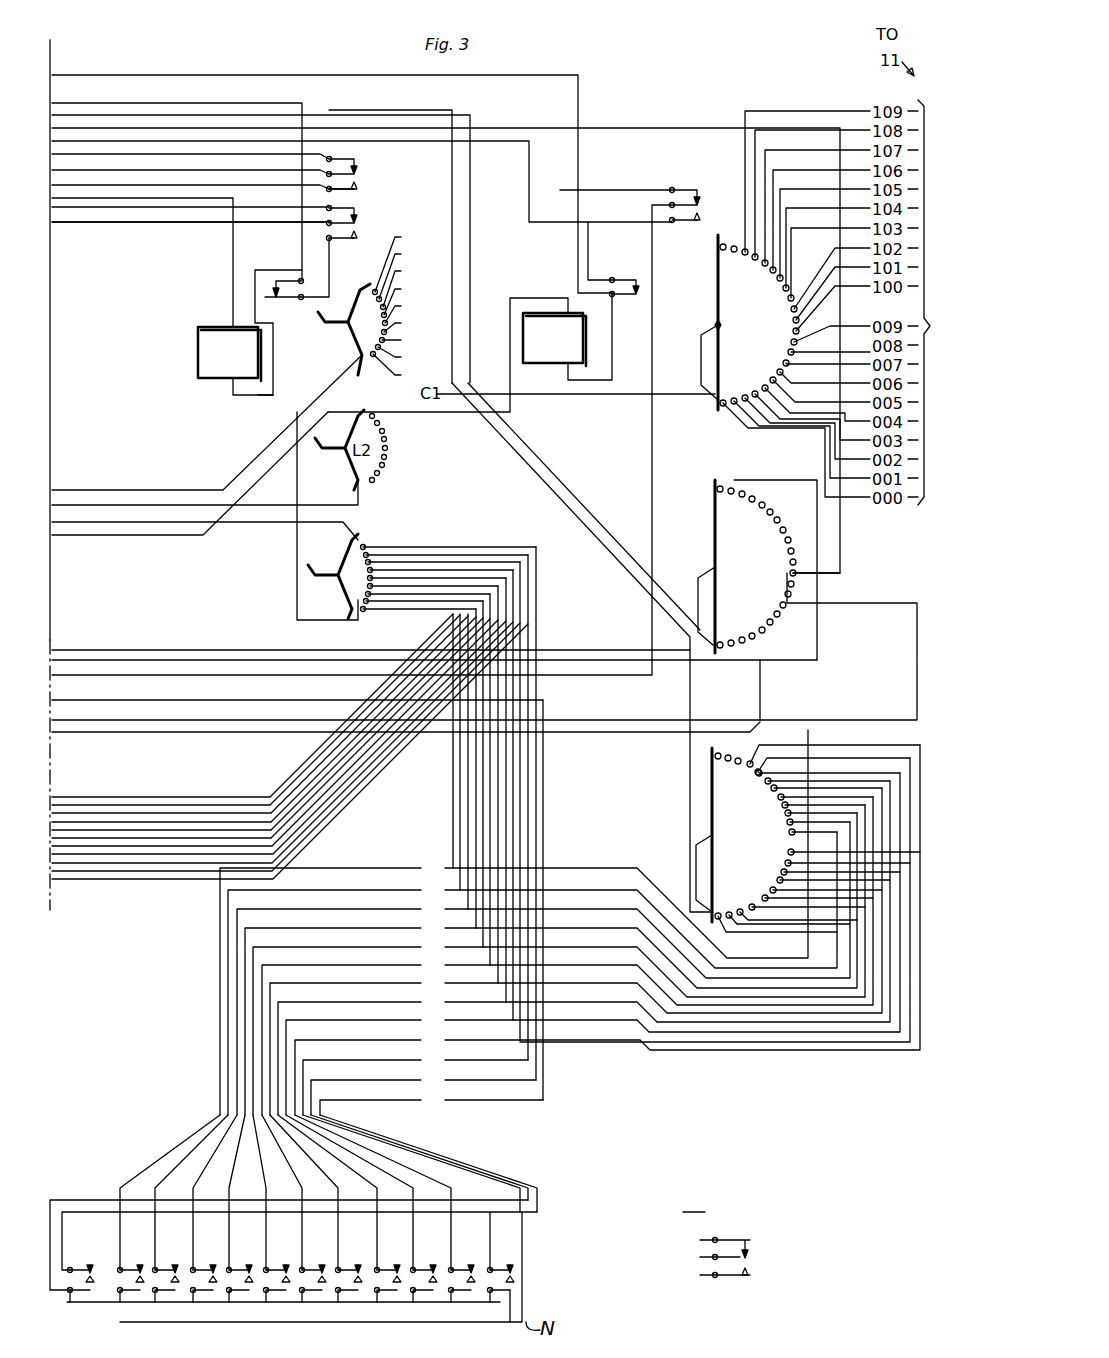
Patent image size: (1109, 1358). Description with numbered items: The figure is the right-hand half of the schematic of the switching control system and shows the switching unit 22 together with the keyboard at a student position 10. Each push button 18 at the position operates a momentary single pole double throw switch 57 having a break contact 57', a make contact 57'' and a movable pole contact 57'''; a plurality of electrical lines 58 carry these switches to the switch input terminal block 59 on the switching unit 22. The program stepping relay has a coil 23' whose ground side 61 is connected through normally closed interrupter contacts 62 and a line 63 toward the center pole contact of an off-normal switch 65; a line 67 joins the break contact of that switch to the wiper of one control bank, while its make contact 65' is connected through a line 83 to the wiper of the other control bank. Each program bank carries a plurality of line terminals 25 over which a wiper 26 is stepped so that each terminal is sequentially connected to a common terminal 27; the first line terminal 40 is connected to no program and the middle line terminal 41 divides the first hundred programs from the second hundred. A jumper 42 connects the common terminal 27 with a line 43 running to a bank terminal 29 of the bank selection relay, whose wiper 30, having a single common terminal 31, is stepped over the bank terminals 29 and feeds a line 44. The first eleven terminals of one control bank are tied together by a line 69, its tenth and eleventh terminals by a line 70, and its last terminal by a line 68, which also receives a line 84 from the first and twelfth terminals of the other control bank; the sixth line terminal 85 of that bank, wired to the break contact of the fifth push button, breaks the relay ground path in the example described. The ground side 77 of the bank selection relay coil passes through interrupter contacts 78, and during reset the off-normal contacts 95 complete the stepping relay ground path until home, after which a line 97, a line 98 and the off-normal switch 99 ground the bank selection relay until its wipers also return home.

The student position 10 is at (90, 1171).
The push buttons 18 is at (530, 1262).
The switching unit 22 is at (122, 394).
The relay coil 23' is at (336, 360).
The line terminals 25 is at (718, 413).
The wiper 26 is at (716, 272).
The common terminal 27 is at (714, 326).
The bank terminal 29 is at (372, 288).
The wiper 30 is at (344, 343).
The common terminal 31 is at (340, 308).
The first line terminal 40 is at (738, 390).
The middle line terminal 41 is at (790, 332).
The jumper 42 is at (704, 348).
The line 43 is at (550, 405).
The line 44 is at (191, 492).
The single pole double throw switch 57 is at (561, 1296).
The break contact 57' is at (742, 1233).
The make contact 57'' is at (777, 1293).
The movable pole contact 57''' is at (791, 1263).
The electrical lines 58 is at (350, 862).
The switch input terminal block 59 is at (455, 1106).
The ground side 61 is at (612, 360).
The interrupter contacts 62 is at (636, 282).
The line 63 is at (547, 190).
The off-normal switch 65 is at (375, 171).
The make contact 65' is at (394, 186).
The line 67 is at (471, 116).
The line 68 is at (816, 516).
The line 69 is at (805, 620).
The line 70 is at (840, 562).
The ground side 77 is at (258, 395).
The interrupter contacts 78 is at (279, 332).
The line 83 is at (514, 444).
The line 84 is at (762, 700).
The sixth line terminal 85 is at (758, 892).
The off-normal contacts 95 is at (700, 215).
The line 97 is at (605, 190).
The line 98 is at (100, 225).
The off-normal switch 99 is at (358, 232).